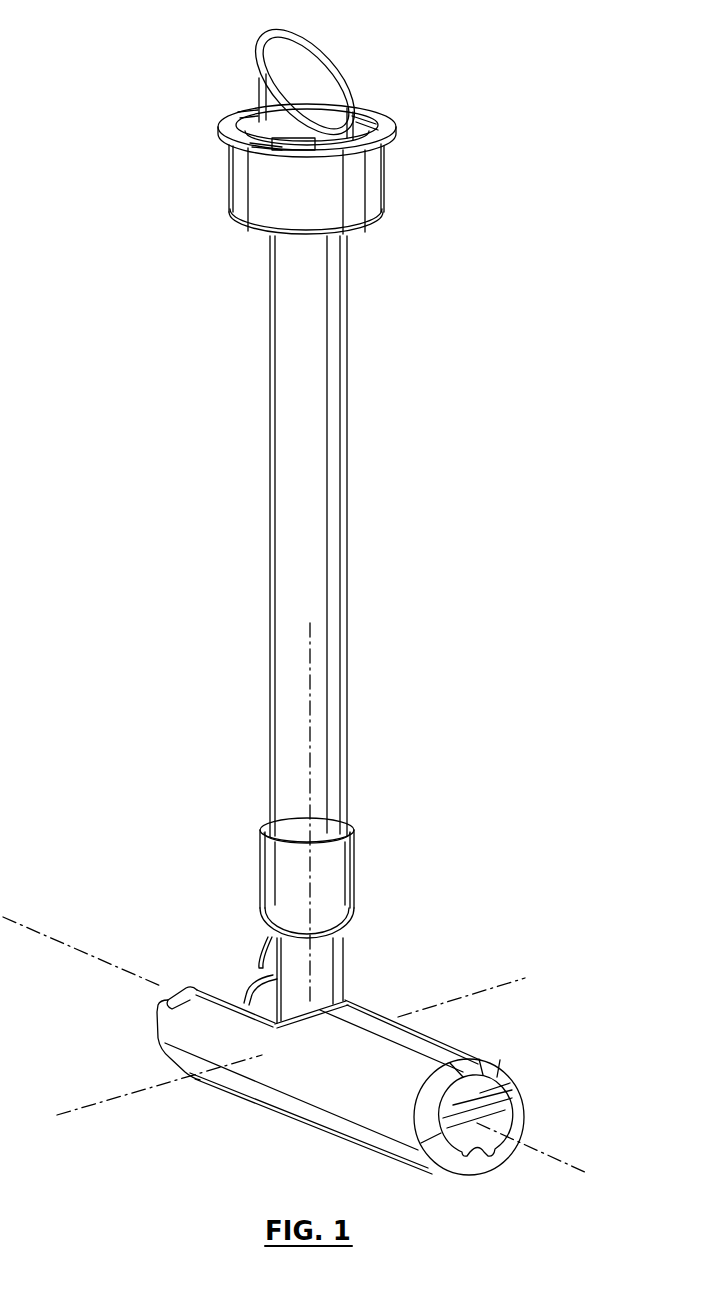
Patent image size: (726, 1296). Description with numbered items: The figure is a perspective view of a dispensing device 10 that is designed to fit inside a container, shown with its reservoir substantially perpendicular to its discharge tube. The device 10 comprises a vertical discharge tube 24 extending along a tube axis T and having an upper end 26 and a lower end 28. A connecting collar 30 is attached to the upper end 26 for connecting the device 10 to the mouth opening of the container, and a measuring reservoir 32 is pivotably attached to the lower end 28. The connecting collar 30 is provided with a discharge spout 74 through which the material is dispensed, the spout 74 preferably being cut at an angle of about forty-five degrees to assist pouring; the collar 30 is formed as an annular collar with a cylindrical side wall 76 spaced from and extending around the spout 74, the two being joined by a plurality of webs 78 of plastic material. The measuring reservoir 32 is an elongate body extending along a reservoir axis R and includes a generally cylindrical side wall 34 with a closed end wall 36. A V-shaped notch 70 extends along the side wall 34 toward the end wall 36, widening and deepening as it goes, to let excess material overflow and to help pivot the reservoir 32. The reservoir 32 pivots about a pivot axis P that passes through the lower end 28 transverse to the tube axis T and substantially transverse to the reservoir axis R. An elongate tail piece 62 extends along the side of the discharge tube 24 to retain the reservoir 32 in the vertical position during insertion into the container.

The dispensing device 10 is at (222, 547).
The vertical discharge tube 24 is at (347, 435).
The upper end 26 is at (292, 262).
The lower end 28 is at (345, 955).
The connecting collar 30 is at (450, 175).
The measuring reservoir 32 is at (499, 965).
The cylindrical side wall 34 is at (312, 1107).
The closed end wall 36 is at (503, 1113).
The elongate tail piece 62 is at (260, 953).
The V-shaped notch 70 is at (470, 1158).
The discharge spout 74 is at (343, 67).
The cylindrical side wall 76 is at (360, 210).
The webs 78 is at (250, 113).
The tube axis T is at (312, 752).
The reservoir axis R is at (43, 930).
The pivot axis P is at (125, 1095).